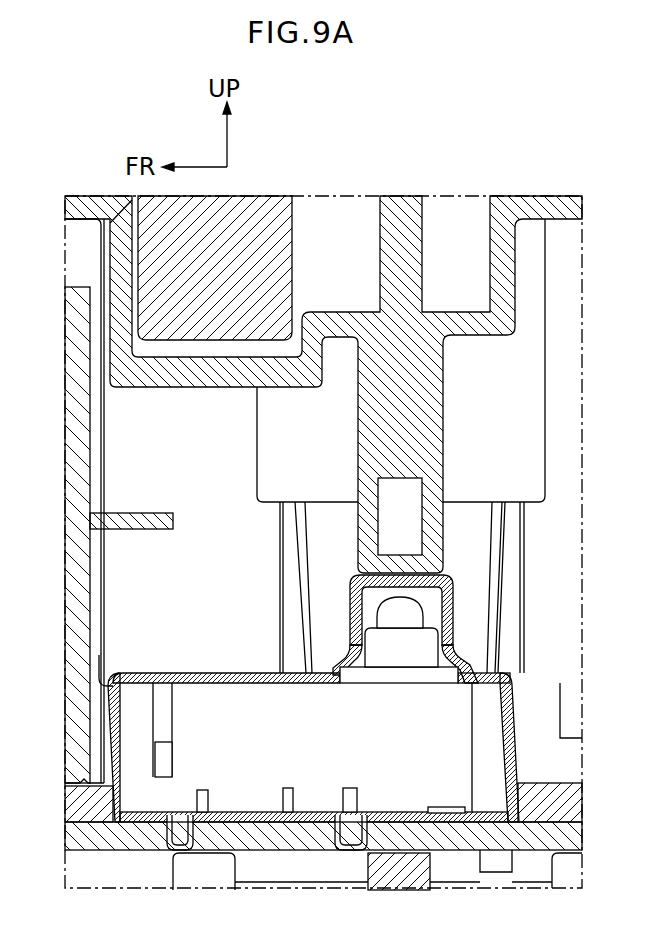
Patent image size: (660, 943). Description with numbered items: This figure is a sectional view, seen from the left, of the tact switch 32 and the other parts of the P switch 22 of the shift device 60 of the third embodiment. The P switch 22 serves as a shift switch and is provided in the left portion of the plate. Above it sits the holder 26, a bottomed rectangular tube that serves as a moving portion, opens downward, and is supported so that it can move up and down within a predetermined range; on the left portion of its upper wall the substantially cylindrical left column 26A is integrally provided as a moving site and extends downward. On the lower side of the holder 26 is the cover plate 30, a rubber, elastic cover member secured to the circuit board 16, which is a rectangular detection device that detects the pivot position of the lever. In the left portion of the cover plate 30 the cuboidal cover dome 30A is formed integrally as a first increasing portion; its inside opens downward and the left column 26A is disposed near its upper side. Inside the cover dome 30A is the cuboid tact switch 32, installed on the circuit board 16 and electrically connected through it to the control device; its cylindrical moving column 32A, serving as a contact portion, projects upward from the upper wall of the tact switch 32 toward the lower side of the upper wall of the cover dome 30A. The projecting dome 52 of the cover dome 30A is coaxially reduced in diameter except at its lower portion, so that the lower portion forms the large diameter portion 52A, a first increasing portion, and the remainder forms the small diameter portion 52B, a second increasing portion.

The circuit board 16 is at (120, 853).
The P switch 22 is at (470, 213).
The holder 26 is at (183, 388).
The left column 26A is at (443, 413).
The cover plate 30 is at (557, 783).
The cover dome 30A is at (140, 673).
The tact switch 32 is at (215, 673).
The moving column 32A is at (383, 603).
The projecting dome 52 is at (355, 590).
The large diameter portion 52A is at (465, 650).
The small diameter portion 52B is at (455, 585).
The shift device 60 is at (414, 167).